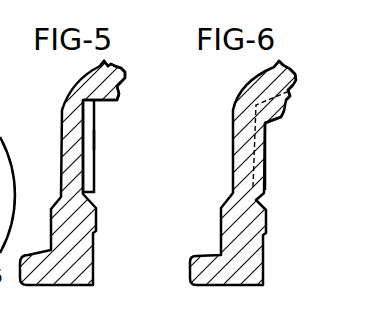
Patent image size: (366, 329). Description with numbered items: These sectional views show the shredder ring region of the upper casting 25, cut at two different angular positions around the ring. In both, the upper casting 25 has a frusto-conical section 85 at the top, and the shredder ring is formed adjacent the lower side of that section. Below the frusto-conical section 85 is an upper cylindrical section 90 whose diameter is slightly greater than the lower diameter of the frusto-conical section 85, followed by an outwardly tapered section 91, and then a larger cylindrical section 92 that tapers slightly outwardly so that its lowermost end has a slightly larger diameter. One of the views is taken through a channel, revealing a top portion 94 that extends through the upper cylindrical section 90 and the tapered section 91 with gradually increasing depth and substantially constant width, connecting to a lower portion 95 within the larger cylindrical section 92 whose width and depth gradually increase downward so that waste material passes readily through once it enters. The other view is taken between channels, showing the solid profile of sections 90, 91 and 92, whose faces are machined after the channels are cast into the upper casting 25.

In FIG. 5, the upper casting 25 is at (62, 128).
In FIG. 6, the upper casting 25 is at (237, 187).
In FIG. 5, the frusto-conical section 85 is at (126, 79).
In FIG. 6, the frusto-conical section 85 is at (294, 88).
In FIG. 5, the upper cylindrical section 90 is at (118, 95).
In FIG. 6, the upper cylindrical section 90 is at (290, 97).
In FIG. 5, the outwardly tapered section 91 is at (107, 98).
In FIG. 6, the outwardly tapered section 91 is at (284, 113).
In FIG. 5, the larger cylindrical section 92 is at (84, 163).
In FIG. 6, the larger cylindrical section 92 is at (266, 163).
In FIG. 5, the top portion of channel 94 is at (110, 113).
In FIG. 5, the lower portion of channel 95 is at (98, 142).